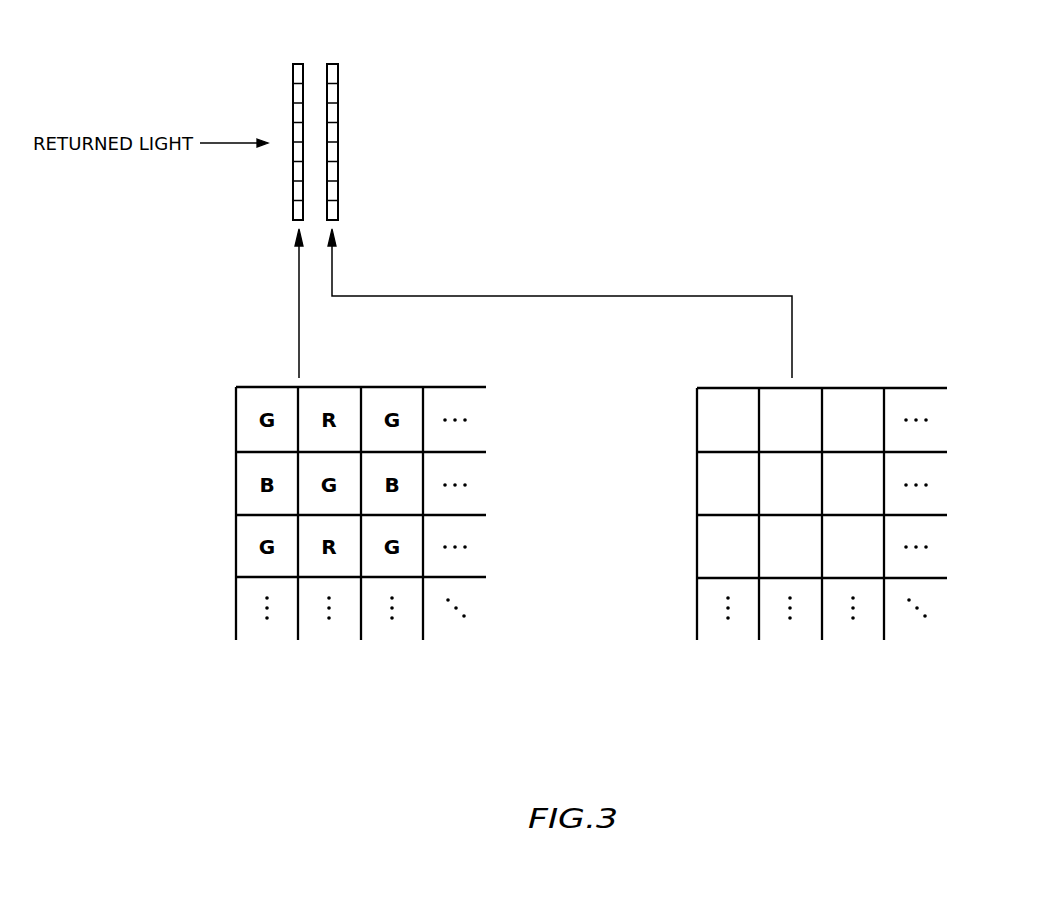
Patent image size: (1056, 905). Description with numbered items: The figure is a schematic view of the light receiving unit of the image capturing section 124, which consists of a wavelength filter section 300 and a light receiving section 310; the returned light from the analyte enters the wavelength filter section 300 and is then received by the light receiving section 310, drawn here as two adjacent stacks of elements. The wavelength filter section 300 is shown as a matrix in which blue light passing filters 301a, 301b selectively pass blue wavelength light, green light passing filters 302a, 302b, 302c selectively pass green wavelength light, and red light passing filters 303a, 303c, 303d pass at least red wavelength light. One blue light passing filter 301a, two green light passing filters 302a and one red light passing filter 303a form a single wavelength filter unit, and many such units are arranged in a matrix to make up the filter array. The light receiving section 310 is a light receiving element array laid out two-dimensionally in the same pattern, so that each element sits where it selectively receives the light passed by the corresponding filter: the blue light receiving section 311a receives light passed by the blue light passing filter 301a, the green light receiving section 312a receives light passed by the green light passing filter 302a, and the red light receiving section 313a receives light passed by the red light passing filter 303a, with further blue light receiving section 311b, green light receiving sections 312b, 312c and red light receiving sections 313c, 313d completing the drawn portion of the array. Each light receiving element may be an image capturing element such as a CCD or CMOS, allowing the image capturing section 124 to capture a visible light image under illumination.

The image capturing section 124 is at (590, 731).
The wavelength filter section 300 is at (296, 63).
The light receiving section 310 is at (332, 63).
The blue light passing filter 301a is at (244, 469).
The blue light passing filter 301b is at (413, 490).
The green light passing filter 302a is at (267, 394).
The green light passing filter 302b is at (393, 394).
The green light passing filter 302c is at (244, 532).
The red light passing filter 303a is at (331, 394).
The red light passing filter 303c is at (308, 553).
The red light passing filter 303d is at (413, 553).
The blue light receiving section 311a is at (705, 470).
The blue light receiving section 311b is at (874, 490).
The green light receiving section 312a is at (729, 394).
The green light receiving section 312b is at (865, 394).
The green light receiving section 312c is at (705, 532).
The red light receiving section 313a is at (803, 394).
The red light receiving section 313c is at (769, 553).
The red light receiving section 313d is at (874, 553).